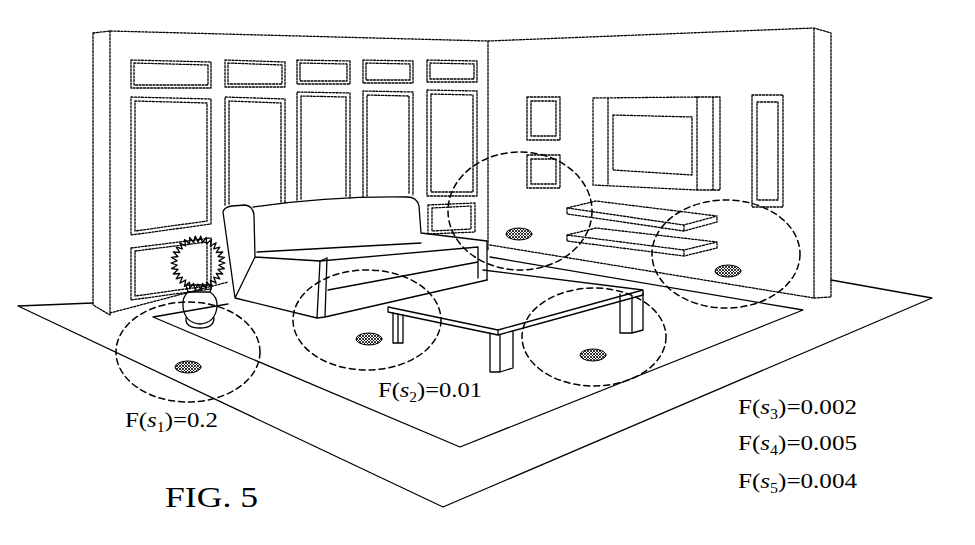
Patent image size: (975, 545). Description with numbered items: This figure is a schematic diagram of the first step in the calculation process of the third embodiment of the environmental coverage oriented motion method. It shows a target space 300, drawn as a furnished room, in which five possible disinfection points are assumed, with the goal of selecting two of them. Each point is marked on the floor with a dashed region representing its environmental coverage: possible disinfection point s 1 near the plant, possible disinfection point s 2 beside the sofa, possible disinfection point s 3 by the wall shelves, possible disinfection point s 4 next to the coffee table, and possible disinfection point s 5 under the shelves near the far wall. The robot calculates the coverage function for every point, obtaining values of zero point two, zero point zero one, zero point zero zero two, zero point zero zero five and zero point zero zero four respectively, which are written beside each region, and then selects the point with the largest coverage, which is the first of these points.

The target space 300 is at (475, 267).
The possible disinfection point s1 1 is at (188, 352).
The possible disinfection point s2 2 is at (367, 320).
The possible disinfection point s3 3 is at (520, 211).
The possible disinfection point s4 4 is at (594, 337).
The possible disinfection point s5 5 is at (726, 254).